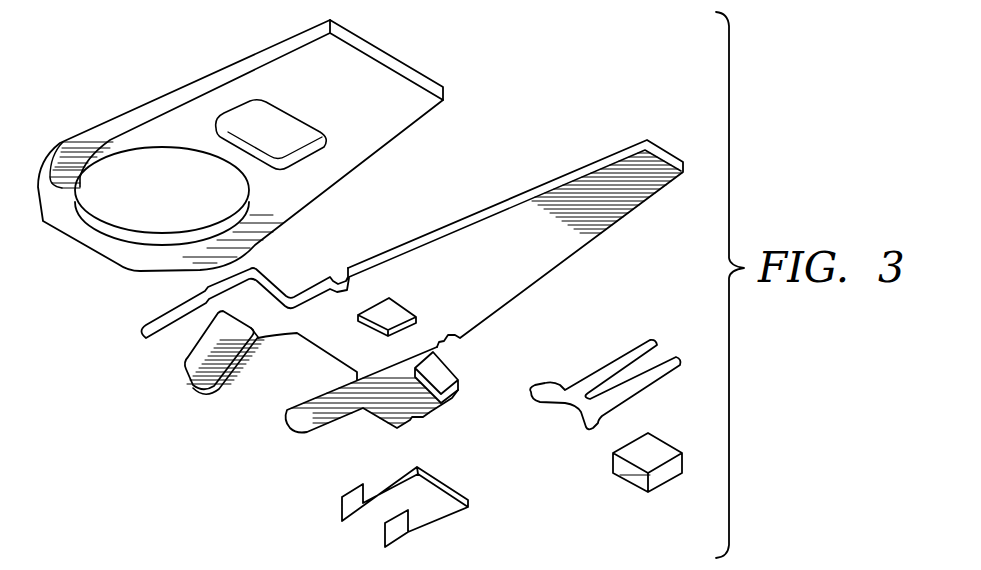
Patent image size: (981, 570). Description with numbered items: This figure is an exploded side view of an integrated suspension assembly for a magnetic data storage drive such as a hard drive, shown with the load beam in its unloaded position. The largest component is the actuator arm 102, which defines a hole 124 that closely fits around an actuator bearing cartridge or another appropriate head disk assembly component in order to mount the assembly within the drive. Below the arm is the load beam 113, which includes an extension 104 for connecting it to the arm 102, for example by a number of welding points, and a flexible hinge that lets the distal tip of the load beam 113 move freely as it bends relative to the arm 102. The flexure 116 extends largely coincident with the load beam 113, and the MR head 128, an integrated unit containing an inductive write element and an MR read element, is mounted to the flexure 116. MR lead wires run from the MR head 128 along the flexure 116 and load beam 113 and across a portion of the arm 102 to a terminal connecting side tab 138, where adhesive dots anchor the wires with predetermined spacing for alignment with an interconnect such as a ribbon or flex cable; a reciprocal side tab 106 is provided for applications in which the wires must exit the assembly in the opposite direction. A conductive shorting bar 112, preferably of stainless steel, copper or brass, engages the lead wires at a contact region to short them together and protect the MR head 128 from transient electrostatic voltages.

The actuator arm 102 is at (108, 117).
The extension 104 is at (184, 365).
The reciprocal side tab 106 is at (148, 323).
The conductive shorting bar 112 is at (458, 494).
The load beam 113 is at (607, 154).
The flexure 116 is at (628, 353).
The hole 124 is at (215, 222).
The MR head 128 is at (630, 483).
The terminal connecting side tab 138 is at (439, 408).